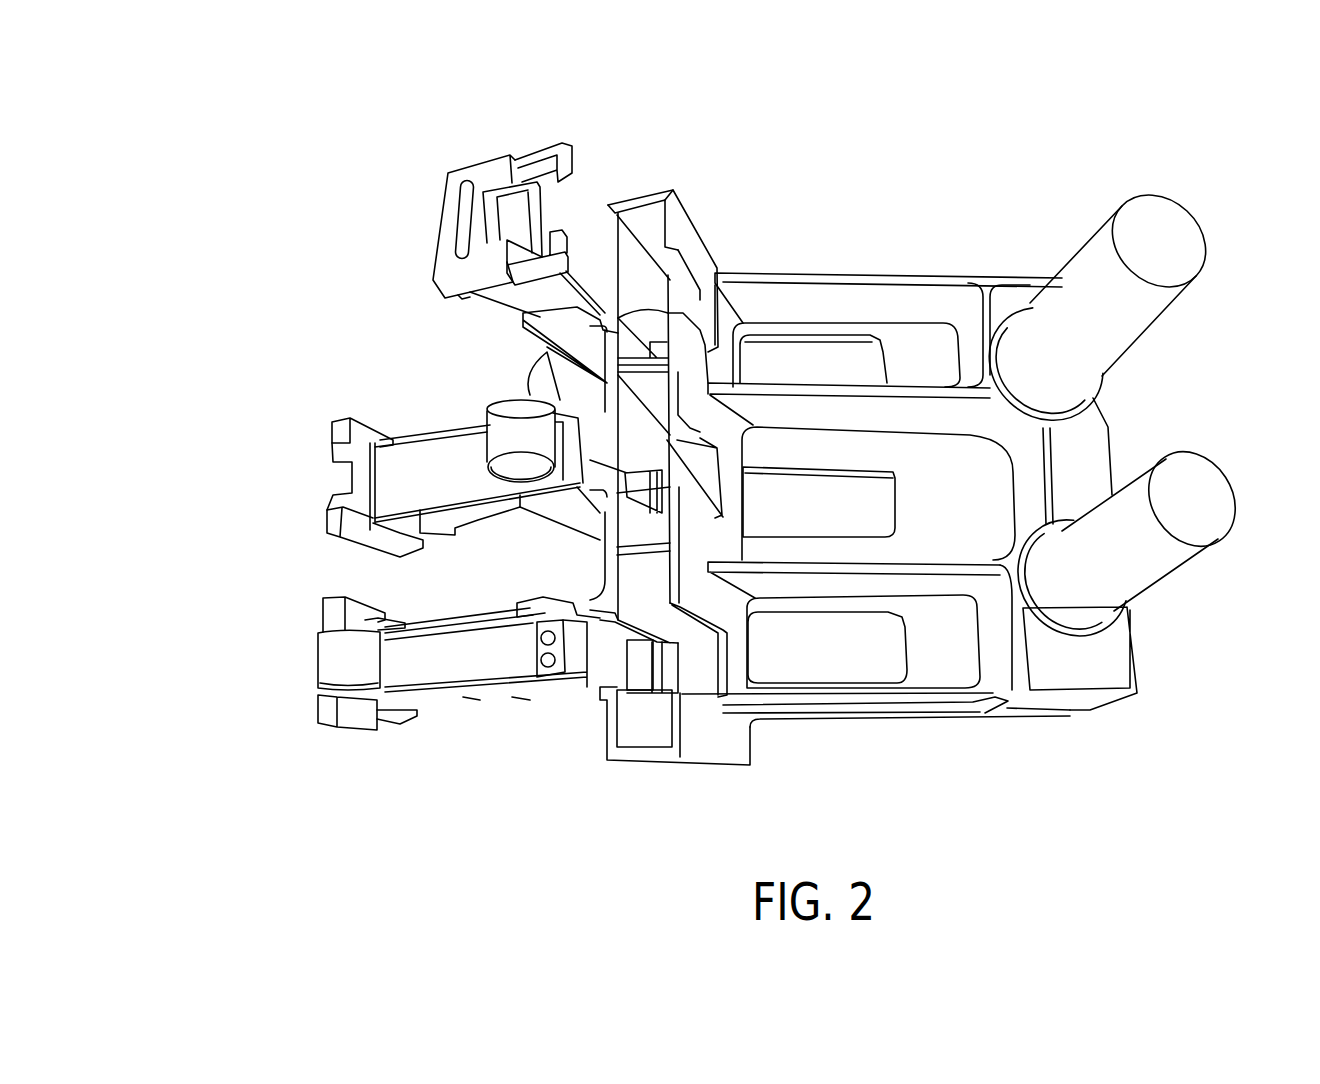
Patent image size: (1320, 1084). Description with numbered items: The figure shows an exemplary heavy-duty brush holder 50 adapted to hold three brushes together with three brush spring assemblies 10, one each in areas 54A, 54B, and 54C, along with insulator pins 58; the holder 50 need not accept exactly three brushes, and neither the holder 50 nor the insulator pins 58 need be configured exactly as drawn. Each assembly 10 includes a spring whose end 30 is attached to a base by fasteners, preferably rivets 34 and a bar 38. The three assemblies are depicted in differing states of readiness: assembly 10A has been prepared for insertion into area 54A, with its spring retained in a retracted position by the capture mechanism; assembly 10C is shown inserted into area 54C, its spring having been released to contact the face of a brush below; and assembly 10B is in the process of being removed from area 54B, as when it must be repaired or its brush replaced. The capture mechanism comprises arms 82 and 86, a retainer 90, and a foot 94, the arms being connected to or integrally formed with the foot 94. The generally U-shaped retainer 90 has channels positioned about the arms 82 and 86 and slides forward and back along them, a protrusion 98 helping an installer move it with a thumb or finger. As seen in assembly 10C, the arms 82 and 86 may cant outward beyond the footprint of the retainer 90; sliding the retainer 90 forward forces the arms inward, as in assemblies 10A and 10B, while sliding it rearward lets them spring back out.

The brush spring assembly 10 is at (344, 310).
The brush spring assembly 10A is at (410, 746).
The brush spring assembly 10B is at (285, 546).
The brush spring assembly 10C is at (448, 183).
The end of spring 30 is at (500, 667).
The rivets 34 is at (550, 667).
The bar 38 is at (555, 670).
The holder 50 is at (873, 481).
The area 54A is at (670, 680).
The area 54B is at (660, 432).
The area 54C is at (660, 265).
The insulator pins 58 is at (1168, 200).
The arm 82 is at (563, 146).
The arm 86 is at (565, 240).
The retainer 90 is at (447, 176).
The foot 94 is at (518, 217).
The protrusion 98 is at (450, 238).